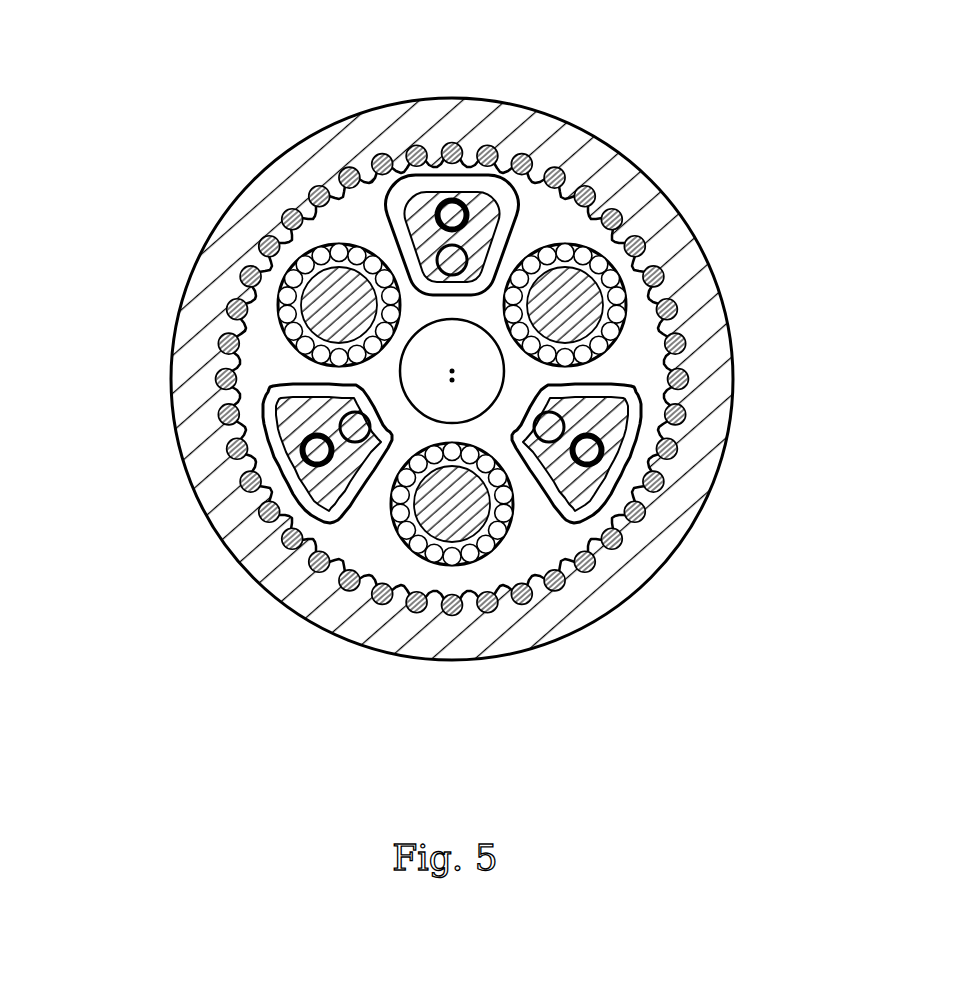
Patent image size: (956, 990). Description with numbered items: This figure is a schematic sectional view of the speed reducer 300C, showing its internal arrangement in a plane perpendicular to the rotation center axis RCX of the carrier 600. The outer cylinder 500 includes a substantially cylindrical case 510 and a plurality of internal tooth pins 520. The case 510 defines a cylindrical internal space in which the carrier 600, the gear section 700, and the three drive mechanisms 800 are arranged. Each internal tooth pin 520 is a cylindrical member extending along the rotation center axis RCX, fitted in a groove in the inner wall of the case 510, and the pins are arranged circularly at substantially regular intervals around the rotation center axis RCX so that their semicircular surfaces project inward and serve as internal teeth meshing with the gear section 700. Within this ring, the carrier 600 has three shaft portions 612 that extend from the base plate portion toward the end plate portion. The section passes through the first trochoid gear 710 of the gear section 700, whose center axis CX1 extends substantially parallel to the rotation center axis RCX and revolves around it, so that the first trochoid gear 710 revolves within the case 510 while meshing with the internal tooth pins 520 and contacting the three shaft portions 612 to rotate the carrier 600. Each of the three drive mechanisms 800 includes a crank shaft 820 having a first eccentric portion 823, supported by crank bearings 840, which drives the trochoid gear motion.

The speed reducer 300C is at (690, 100).
The outer cylinder 500 is at (502, 419).
The case 510 is at (502, 419).
The internal tooth pins 520 is at (470, 143).
The carrier 600 is at (563, 503).
The shaft portions 612 is at (520, 195).
The gear section 700 is at (452, 419).
The first trochoid gear 710 is at (522, 562).
The drive mechanisms 800 is at (303, 257).
The crank shaft 820 is at (320, 317).
The first eccentric portion 823 is at (437, 493).
The crank bearings 840 is at (290, 280).
The center axis of the first trochoid gear CX1 is at (452, 371).
The rotation center axis RCX is at (452, 380).